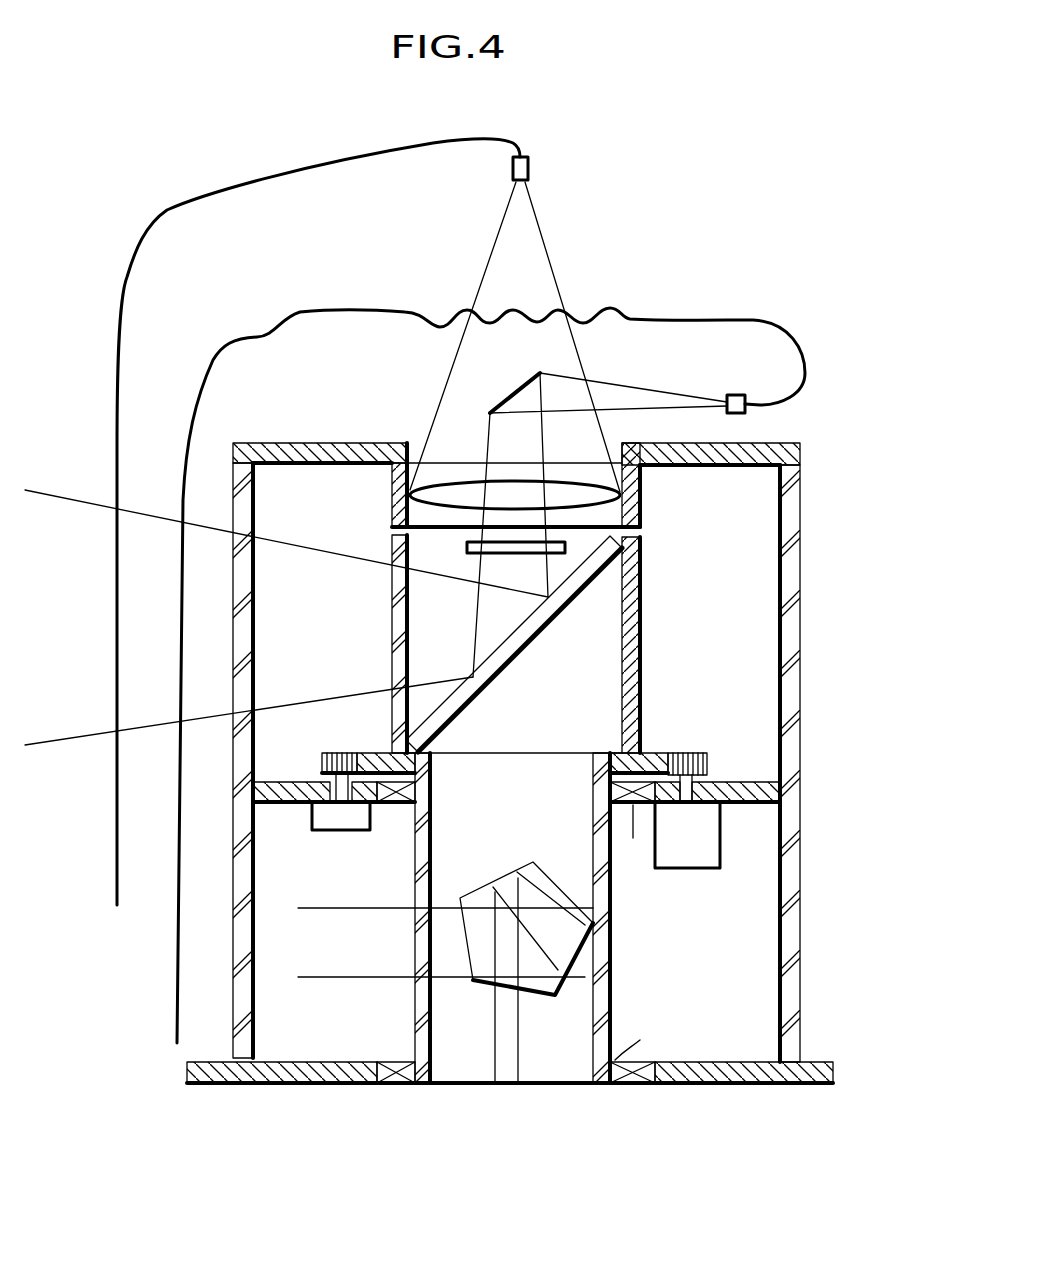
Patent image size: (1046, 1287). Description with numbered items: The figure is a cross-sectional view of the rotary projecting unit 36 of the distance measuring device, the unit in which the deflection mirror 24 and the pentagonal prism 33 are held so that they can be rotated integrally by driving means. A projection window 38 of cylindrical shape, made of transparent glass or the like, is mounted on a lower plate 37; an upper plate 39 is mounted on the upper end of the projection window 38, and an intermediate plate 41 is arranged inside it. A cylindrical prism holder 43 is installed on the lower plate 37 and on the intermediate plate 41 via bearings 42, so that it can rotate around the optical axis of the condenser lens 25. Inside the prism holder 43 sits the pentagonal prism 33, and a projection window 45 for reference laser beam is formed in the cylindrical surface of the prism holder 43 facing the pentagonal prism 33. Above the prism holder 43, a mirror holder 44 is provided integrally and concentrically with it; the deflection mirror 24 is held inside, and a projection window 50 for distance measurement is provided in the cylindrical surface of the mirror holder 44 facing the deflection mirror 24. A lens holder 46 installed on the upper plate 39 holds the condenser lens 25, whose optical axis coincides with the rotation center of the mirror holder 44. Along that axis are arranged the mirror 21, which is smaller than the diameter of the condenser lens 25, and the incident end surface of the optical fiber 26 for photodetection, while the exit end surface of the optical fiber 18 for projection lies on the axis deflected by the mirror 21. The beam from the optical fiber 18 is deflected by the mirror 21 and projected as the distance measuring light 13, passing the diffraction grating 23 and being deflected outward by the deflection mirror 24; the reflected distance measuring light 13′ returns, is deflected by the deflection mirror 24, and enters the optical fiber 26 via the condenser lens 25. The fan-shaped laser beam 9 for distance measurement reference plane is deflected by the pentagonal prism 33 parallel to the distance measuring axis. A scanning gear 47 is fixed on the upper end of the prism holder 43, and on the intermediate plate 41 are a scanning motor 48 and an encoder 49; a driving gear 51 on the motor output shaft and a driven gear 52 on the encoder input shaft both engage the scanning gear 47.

The laser beam for distance measurement reference plane 9 is at (360, 978).
The distance measuring light 13 is at (78, 500).
The reflected distance measuring light 13′ is at (557, 283).
The optical fiber for projection 18 is at (350, 312).
The mirror 21 is at (488, 410).
The diffraction grating 23 is at (567, 541).
The deflection mirror 24 is at (533, 637).
The condenser lens 25 is at (457, 482).
The optical fiber for photodetection 26 is at (195, 202).
The pentagonal prism 33 is at (517, 872).
The rotary projecting unit 36 is at (754, 231).
The lower plate 37 is at (812, 1060).
The projection window 38 is at (805, 722).
The upper plate 39 is at (777, 443).
The intermediate plate 41 is at (742, 782).
The bearings 42 is at (643, 932).
The prism holder 43 is at (613, 945).
The mirror holder 44 is at (645, 582).
The projection window for reference laser beam 45 is at (420, 945).
The lens holder 46 is at (393, 497).
The scanning gear 47 is at (655, 752).
The scanning motor 48 is at (720, 866).
The encoder 49 is at (340, 832).
The projection window for distance measurement 50 is at (393, 612).
The driving gear 51 is at (688, 752).
The driven gear 52 is at (340, 752).